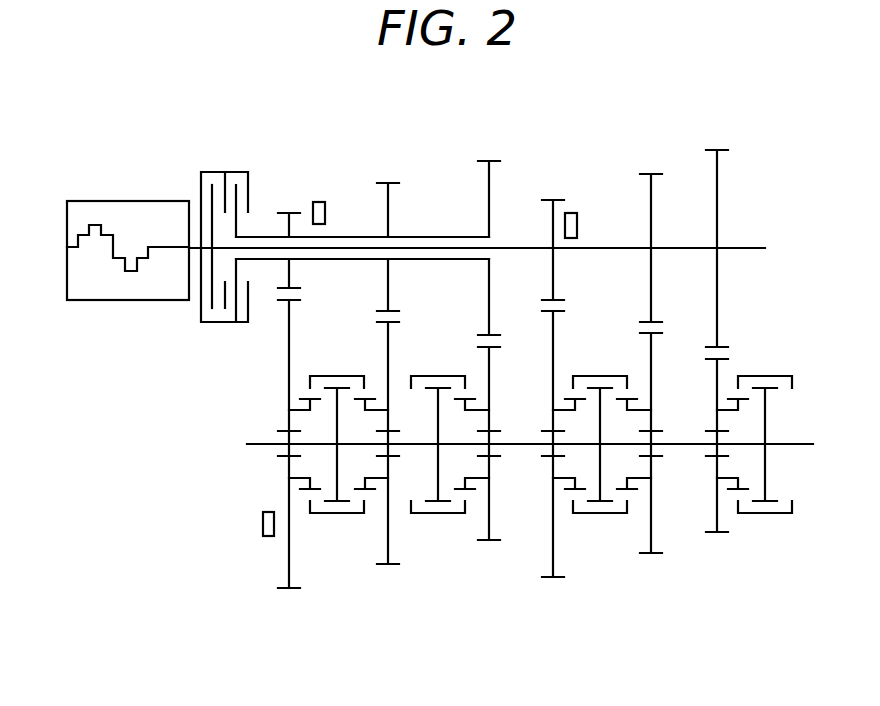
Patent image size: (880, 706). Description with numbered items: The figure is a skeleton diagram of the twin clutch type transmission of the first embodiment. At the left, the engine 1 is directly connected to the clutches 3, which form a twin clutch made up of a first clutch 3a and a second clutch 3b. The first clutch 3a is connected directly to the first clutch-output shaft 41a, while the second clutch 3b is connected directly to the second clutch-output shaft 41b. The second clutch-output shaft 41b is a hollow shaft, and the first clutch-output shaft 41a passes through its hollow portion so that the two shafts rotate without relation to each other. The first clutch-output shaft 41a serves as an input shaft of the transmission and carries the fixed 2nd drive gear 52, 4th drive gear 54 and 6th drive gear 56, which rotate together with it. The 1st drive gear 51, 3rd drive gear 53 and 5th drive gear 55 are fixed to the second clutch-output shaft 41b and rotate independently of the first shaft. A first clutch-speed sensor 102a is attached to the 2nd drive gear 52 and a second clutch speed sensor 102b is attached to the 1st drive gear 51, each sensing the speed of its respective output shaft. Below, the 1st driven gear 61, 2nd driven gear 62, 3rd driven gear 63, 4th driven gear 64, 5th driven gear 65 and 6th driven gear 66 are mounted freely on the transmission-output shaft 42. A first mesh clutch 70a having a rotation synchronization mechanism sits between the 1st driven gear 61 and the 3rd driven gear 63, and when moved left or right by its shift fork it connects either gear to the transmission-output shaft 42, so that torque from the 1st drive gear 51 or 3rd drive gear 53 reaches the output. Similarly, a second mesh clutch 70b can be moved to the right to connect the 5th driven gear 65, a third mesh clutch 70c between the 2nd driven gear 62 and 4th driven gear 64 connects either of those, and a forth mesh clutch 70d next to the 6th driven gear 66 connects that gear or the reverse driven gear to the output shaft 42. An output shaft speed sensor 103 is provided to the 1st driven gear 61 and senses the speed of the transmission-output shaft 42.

The engine 1 is at (118, 201).
The clutches 3 is at (218, 172).
The first clutch 3a is at (212, 300).
The second clutch 3b is at (236, 296).
The first clutch-output shaft 41a is at (752, 248).
The second clutch-output shaft 41b is at (264, 237).
The transmission-output shaft 42 is at (808, 444).
The 1st drive gear 51 is at (292, 213).
The 2nd drive gear 52 is at (553, 200).
The 3rd drive gear 53 is at (389, 183).
The 4th drive gear 54 is at (652, 174).
The 5th drive gear 55 is at (489, 161).
The 6th drive gear 56 is at (717, 150).
The 1st driven gear 61 is at (285, 592).
The 2nd driven gear 62 is at (546, 581).
The 3rd driven gear 63 is at (382, 568).
The 4th driven gear 64 is at (646, 557).
The 5th driven gear 65 is at (482, 544).
The 6th driven gear 66 is at (713, 536).
The first mesh clutch 70a is at (337, 376).
The second mesh clutch 70b is at (438, 376).
The third mesh clutch 70c is at (600, 376).
The forth mesh clutch 70d is at (766, 376).
The first clutch-speed sensor 102a is at (575, 213).
The second clutch speed sensor 102b is at (322, 202).
The output shaft speed sensor 103 is at (263, 525).